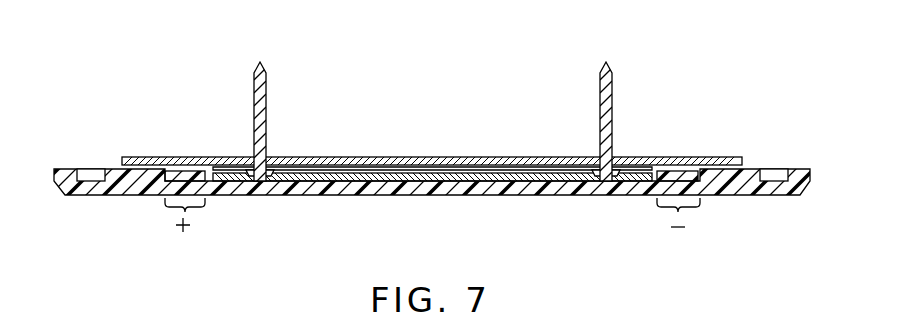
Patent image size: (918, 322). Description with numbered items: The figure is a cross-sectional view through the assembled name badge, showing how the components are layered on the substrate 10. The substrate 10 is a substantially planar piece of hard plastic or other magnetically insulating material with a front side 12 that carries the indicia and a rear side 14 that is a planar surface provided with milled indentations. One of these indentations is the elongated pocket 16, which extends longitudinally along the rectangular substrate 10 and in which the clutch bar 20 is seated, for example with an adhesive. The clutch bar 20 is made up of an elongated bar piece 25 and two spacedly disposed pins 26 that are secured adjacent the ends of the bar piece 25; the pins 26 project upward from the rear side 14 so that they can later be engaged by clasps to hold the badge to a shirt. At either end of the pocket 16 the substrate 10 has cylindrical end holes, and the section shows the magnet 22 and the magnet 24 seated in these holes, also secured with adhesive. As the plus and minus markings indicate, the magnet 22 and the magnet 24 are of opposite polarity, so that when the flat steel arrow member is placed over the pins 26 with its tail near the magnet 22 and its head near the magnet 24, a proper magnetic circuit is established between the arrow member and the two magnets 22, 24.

The substrate 10 is at (296, 203).
The front side 12 is at (541, 197).
The rear side 14 is at (793, 170).
The elongated pocket 16 is at (648, 174).
The clutch bar 20 is at (446, 163).
The magnet 22 is at (680, 181).
The magnet 24 is at (185, 170).
The bar piece 25 is at (343, 182).
The pins 26 is at (262, 96).